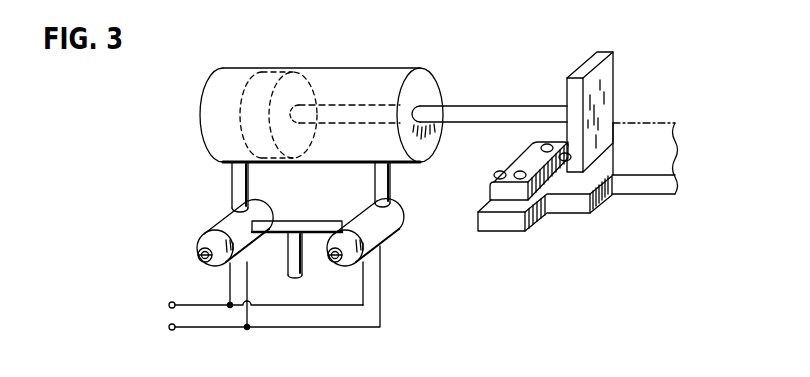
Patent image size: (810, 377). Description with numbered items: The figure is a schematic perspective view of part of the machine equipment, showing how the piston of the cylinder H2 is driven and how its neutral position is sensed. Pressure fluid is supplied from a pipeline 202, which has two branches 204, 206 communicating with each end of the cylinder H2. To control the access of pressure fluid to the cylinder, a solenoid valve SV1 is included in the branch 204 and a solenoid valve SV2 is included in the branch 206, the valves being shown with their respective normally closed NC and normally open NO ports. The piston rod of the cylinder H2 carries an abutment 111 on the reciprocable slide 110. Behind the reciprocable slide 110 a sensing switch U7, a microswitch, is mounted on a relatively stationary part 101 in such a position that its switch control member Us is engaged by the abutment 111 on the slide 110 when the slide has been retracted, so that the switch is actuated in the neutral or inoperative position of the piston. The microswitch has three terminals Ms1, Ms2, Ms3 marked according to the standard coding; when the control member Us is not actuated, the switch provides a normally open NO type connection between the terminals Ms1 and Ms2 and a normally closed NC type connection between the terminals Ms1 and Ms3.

The cylinder H2 is at (354, 77).
The abutment 111 is at (600, 75).
The reciprocable slide 110 is at (637, 135).
The terminal Ms1 is at (547, 145).
The terminal Ms2 is at (518, 178).
The terminal Ms3 is at (497, 172).
The switch control member Us is at (568, 160).
The sensing switch U7 is at (525, 157).
The relatively stationary part 101 is at (492, 225).
The branch 204 is at (235, 192).
The branch 206 is at (377, 185).
The pipeline 202 is at (288, 270).
The solenoid valve SV1 is at (263, 211).
The solenoid valve SV2 is at (393, 213).
The normally closed switch NC is at (205, 238).
The normally open switch NO is at (383, 240).